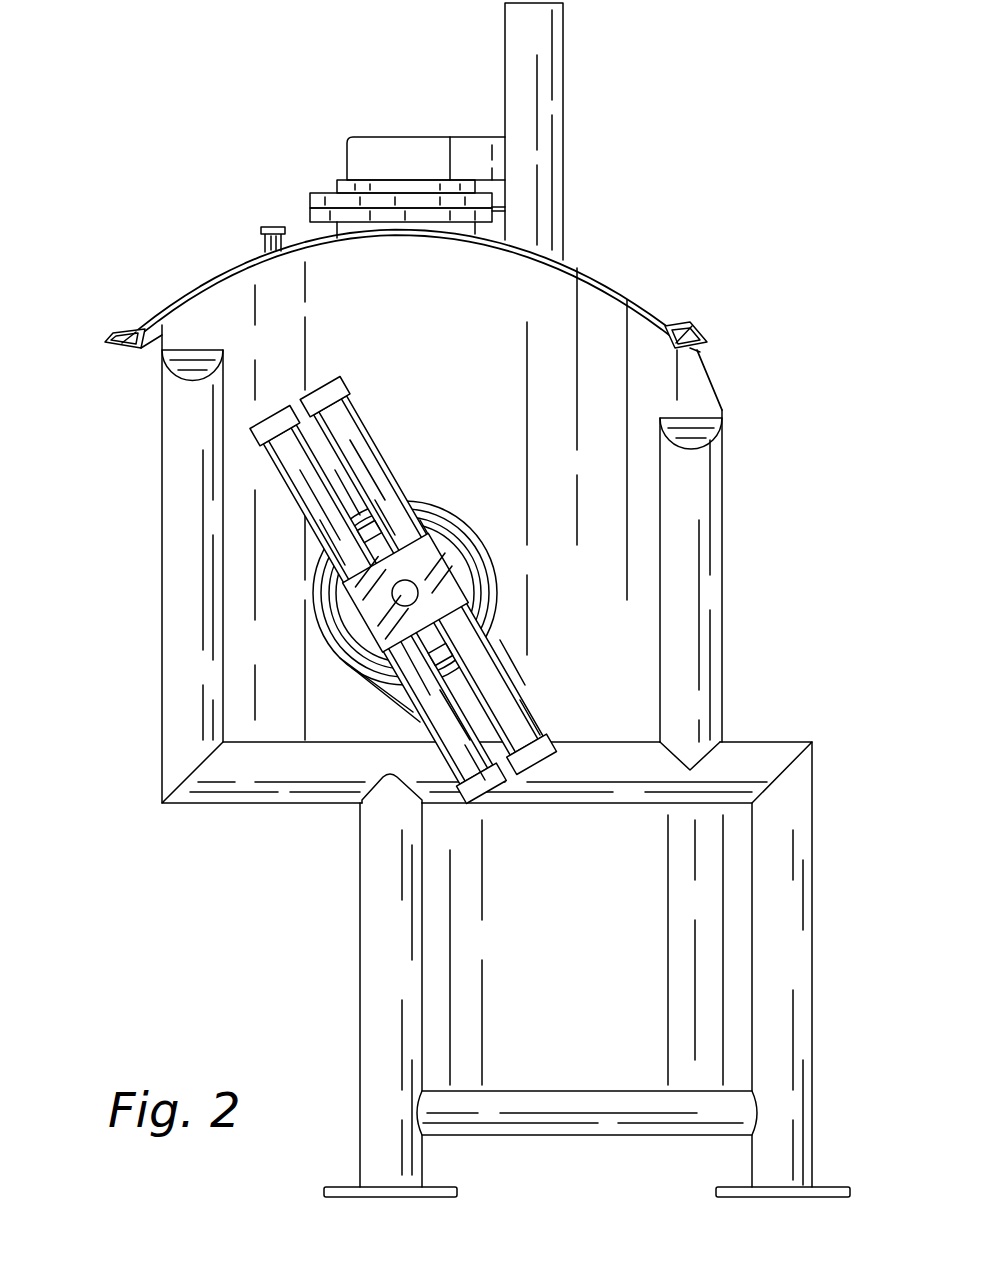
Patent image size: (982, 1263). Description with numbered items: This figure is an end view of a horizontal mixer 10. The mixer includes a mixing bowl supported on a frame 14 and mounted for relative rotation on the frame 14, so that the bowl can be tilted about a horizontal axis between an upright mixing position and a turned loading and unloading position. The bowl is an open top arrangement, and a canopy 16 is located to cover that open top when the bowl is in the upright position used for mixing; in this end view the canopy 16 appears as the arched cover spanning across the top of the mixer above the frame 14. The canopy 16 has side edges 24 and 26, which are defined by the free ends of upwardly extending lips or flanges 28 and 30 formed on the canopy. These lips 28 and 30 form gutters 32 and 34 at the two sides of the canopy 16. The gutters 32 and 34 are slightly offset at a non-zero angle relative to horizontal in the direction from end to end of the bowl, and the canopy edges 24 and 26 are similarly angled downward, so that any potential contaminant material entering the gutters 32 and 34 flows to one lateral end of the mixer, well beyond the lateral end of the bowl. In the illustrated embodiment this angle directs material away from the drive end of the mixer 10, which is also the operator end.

The horizontal mixer 10 is at (205, 118).
The frame 14 is at (770, 747).
The canopy 16 is at (598, 280).
The side edge 24 is at (117, 330).
The side edge 26 is at (702, 329).
The lip 28 is at (127, 350).
The lip 30 is at (697, 350).
The gutter 32 is at (128, 318).
The gutter 34 is at (680, 320).